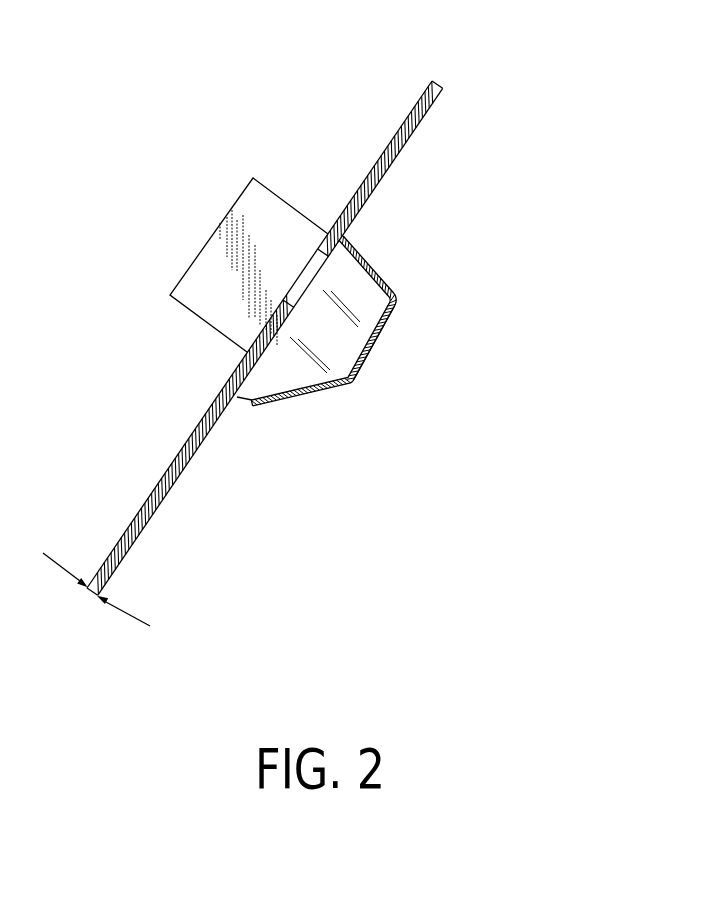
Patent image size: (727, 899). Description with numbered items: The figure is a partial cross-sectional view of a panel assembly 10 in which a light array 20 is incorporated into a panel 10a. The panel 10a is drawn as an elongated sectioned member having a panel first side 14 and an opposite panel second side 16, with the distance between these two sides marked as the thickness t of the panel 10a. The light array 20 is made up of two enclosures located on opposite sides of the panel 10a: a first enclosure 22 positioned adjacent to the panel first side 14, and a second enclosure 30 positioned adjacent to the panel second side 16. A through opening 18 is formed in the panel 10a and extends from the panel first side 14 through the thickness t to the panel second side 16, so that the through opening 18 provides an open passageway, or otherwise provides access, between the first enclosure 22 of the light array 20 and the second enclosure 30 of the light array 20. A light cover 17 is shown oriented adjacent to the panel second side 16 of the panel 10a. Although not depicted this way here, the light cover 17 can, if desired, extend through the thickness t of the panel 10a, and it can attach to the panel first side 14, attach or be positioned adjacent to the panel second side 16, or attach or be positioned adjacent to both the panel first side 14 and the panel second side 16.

The panel assembly 10 is at (508, 145).
The panel 10a is at (442, 78).
The panel first side 14 is at (147, 497).
The panel second side 16 is at (142, 540).
The light cover 17 is at (380, 342).
The through opening 18 is at (320, 257).
The light array 20 is at (208, 323).
The first enclosure 22 is at (250, 197).
The second enclosure 30 is at (358, 293).
The thickness t is at (89, 579).